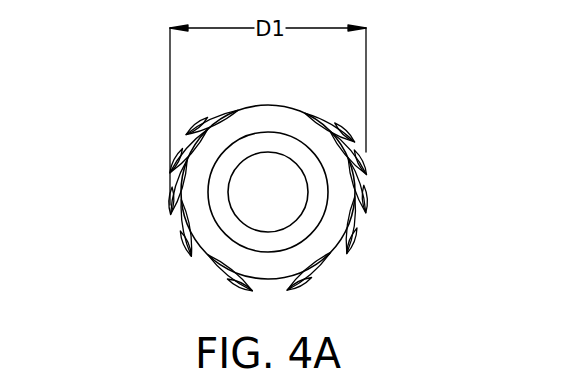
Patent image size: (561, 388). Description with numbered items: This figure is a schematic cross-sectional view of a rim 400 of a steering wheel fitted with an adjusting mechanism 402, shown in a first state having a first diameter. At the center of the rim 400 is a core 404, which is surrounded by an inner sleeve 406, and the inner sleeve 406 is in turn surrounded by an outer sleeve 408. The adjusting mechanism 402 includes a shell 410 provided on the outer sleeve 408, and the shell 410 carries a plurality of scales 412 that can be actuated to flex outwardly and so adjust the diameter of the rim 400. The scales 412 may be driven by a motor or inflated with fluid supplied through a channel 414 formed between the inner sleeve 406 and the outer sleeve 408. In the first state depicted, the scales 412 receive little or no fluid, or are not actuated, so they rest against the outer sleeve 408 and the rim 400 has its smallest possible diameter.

The rim 400 is at (398, 83).
The adjusting mechanism 402 is at (158, 185).
The core 404 is at (269, 164).
The inner sleeve 406 is at (302, 143).
The outer sleeve 408 is at (268, 279).
The shell 410 is at (167, 228).
The scales 412 is at (186, 133).
The channel 414 is at (335, 227).